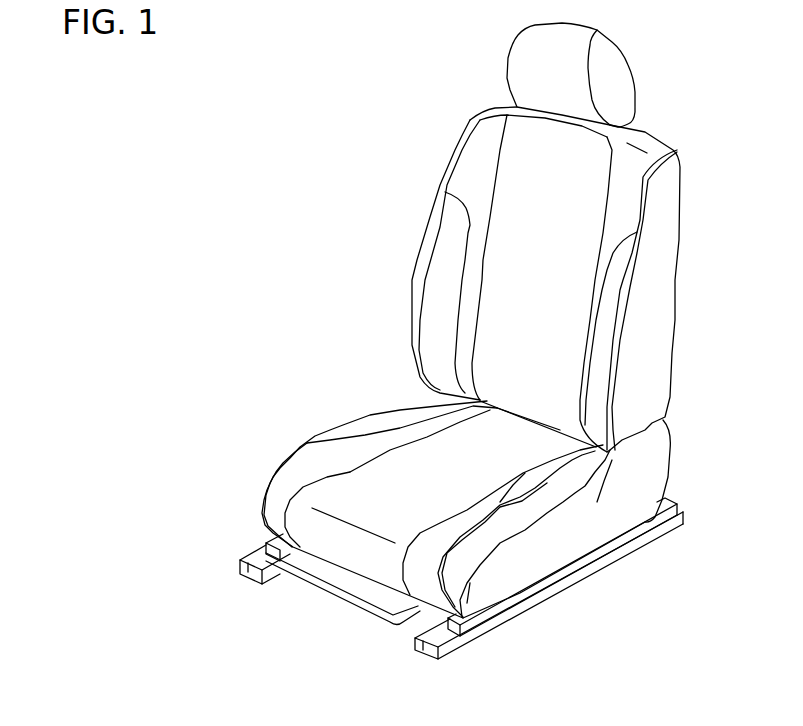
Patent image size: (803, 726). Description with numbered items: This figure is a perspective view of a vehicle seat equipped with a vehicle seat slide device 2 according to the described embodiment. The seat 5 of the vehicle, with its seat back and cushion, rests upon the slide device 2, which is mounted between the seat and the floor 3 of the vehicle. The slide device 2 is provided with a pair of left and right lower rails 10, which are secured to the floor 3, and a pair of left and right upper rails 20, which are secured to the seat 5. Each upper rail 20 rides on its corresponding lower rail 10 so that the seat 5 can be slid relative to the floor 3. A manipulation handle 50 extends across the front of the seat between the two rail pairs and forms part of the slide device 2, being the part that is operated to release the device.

The vehicle seat slide device 2 is at (604, 592).
The floor 3 is at (560, 677).
The seat 5 is at (407, 457).
The lower rails 10 is at (241, 571).
The upper rails 20 is at (270, 544).
The manipulation handle 50 is at (313, 587).